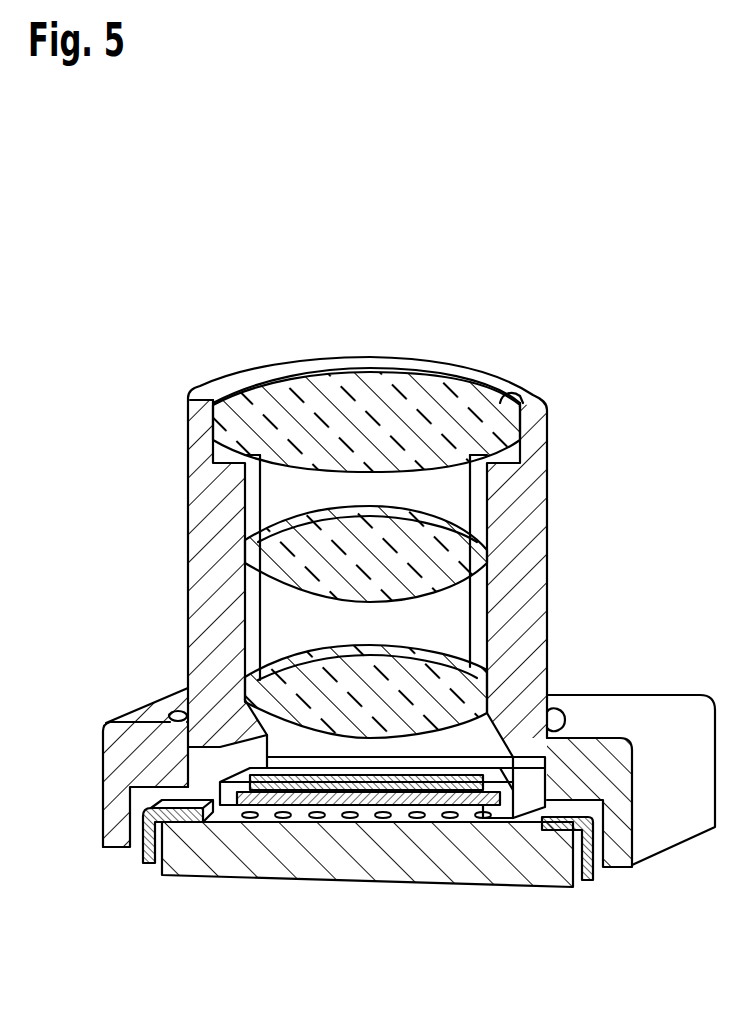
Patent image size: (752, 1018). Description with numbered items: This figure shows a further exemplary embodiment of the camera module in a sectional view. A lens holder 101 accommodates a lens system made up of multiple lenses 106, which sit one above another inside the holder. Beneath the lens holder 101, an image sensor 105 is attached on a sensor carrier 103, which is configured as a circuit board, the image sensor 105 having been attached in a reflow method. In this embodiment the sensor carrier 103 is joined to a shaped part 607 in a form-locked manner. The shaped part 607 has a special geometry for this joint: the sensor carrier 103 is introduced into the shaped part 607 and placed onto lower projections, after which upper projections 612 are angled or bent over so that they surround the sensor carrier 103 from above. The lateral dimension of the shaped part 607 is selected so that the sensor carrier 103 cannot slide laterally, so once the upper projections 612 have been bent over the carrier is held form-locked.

The lens holder 101 is at (200, 515).
The lenses 106 is at (541, 433).
The sensor carrier 103 is at (261, 862).
The image sensor 105 is at (433, 804).
The upper projections 612 is at (173, 826).
The shaped part 607 is at (601, 876).